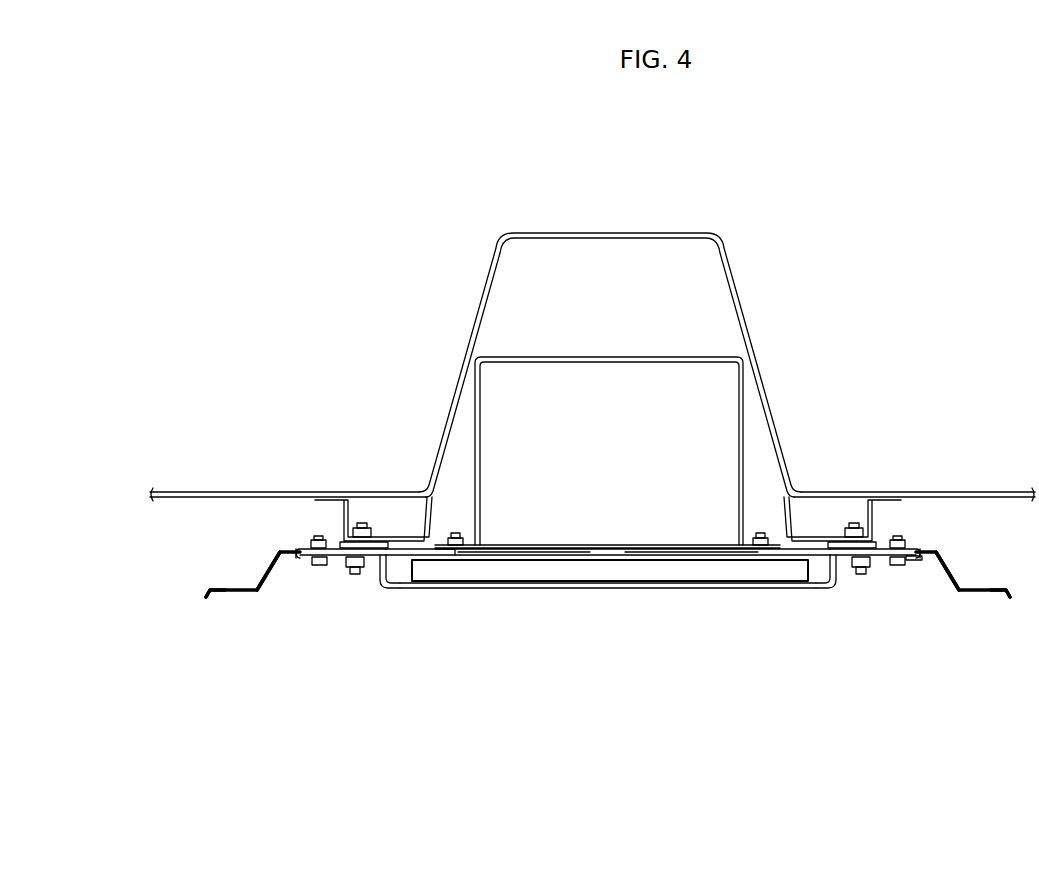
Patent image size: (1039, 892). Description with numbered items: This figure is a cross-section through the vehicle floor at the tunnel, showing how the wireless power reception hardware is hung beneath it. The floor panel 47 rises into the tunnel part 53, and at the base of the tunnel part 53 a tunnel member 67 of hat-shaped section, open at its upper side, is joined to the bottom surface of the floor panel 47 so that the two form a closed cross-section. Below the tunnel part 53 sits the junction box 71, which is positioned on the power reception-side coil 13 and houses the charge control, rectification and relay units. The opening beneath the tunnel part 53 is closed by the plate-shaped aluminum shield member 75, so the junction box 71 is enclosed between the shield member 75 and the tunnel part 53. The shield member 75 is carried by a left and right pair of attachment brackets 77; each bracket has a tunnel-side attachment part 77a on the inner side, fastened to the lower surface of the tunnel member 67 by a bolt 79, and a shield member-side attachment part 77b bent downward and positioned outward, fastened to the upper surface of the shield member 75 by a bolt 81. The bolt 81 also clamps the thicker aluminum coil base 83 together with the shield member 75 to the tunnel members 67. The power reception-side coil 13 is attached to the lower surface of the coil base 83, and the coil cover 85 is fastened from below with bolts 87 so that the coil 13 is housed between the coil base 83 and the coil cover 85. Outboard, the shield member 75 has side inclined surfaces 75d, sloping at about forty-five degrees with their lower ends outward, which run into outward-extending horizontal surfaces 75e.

The power reception-side coil 13 is at (563, 567).
The floor panel 47 is at (826, 492).
The tunnel part 53 is at (566, 233).
The tunnel member 67 is at (341, 513).
The junction box 71 is at (626, 357).
The shield member 75 is at (973, 592).
The side inclined surface 75d is at (272, 568).
The horizontal surface 75e is at (221, 598).
The attachment bracket 77 is at (305, 545).
The tunnel-side attachment part 77a is at (392, 590).
The shield member-side attachment part 77b is at (300, 545).
The bolt 79 is at (362, 522).
The bolt 81 is at (318, 567).
The coil base 83 is at (920, 562).
The coil cover 85 is at (703, 590).
The bolt 87 is at (356, 576).